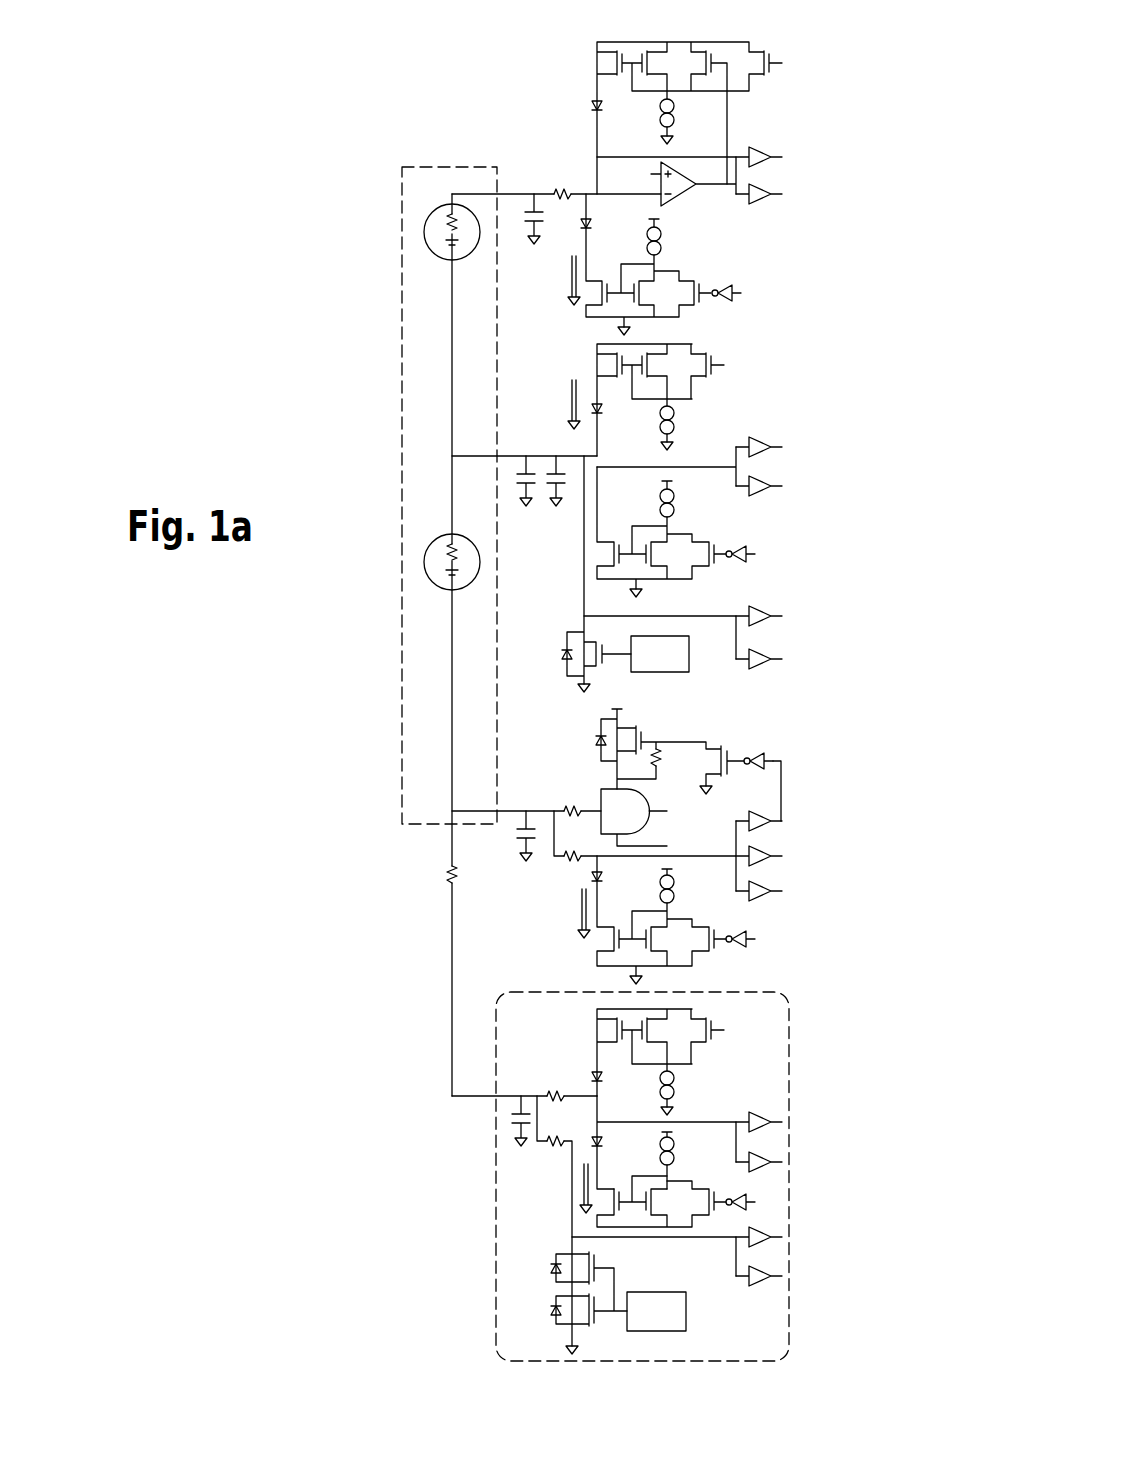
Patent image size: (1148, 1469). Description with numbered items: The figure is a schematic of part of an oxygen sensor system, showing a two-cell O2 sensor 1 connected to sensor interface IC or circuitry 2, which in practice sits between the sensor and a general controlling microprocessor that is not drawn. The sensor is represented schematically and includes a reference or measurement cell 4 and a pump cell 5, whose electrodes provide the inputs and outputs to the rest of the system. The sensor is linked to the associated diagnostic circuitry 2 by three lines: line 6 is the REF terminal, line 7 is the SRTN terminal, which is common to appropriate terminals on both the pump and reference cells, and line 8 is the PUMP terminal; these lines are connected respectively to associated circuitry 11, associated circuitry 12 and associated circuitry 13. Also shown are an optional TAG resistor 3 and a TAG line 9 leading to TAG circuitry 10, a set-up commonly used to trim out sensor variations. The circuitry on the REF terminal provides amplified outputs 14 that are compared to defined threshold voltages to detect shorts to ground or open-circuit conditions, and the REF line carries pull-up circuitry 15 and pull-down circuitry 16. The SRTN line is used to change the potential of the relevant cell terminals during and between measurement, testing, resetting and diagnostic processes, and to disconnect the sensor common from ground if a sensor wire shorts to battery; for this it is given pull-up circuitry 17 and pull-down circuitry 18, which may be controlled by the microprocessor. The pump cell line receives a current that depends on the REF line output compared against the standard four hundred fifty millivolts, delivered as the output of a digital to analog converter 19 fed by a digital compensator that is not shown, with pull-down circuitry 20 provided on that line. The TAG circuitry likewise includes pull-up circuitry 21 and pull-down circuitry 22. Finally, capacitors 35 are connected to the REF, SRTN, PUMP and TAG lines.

The 2-cell O2 sensor 1 is at (428, 600).
The sensor interface IC or circuitry 2 is at (645, 684).
The TAG resistor 3 is at (447, 874).
The reference (REF) or measurement cell 4 is at (427, 236).
The pump cell 5 is at (427, 558).
The REF terminal line 6 is at (513, 193).
The SRTN terminal line 7 is at (475, 455).
The PUMP terminal line 8 is at (477, 810).
The TAG line 9 is at (475, 1100).
The TAG circuitry 10 is at (603, 1161).
The REF line associated circuitry 11 is at (686, 172).
The SRTN line associated circuitry 12 is at (691, 498).
The PUMP line associated circuitry 13 is at (673, 852).
The outputs 14 is at (788, 150).
The pull-up circuitry 15 is at (760, 32).
The pull-down circuitry 16 is at (652, 264).
The pull-up circuitry 17 is at (583, 338).
The pull-down circuitry 18 is at (570, 590).
The digital to analog converter (DAC) 19 is at (603, 802).
The pull-down circuitry 20 is at (570, 948).
The pull-up circuitry 21 is at (593, 1037).
The pull-down circuitry 22 is at (647, 1157).
The capacitors 35 is at (532, 220).